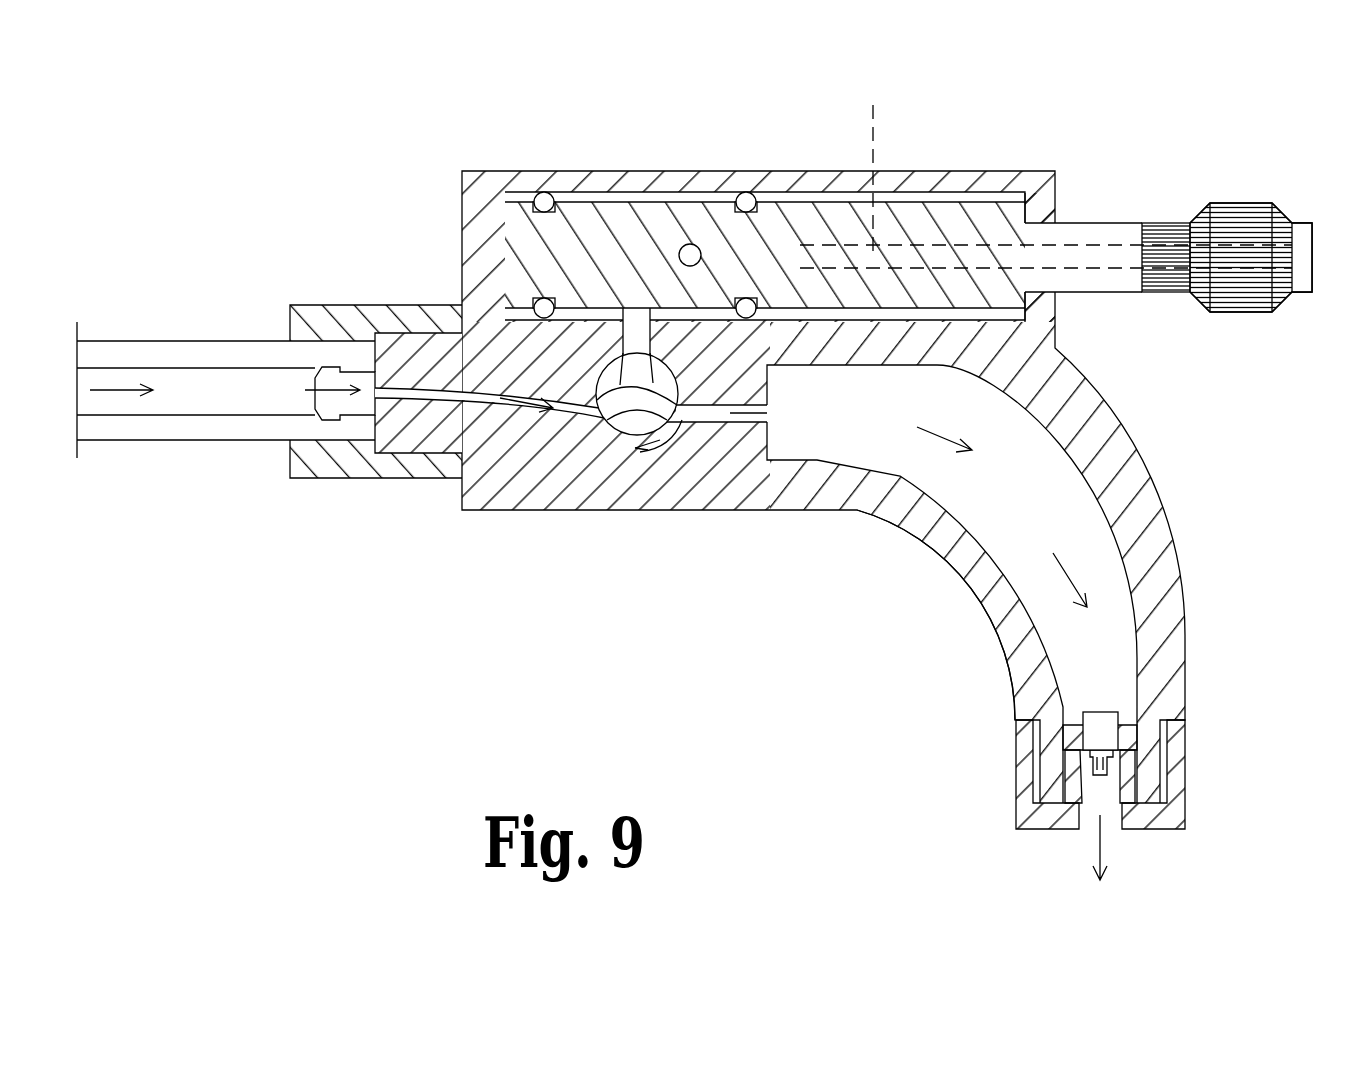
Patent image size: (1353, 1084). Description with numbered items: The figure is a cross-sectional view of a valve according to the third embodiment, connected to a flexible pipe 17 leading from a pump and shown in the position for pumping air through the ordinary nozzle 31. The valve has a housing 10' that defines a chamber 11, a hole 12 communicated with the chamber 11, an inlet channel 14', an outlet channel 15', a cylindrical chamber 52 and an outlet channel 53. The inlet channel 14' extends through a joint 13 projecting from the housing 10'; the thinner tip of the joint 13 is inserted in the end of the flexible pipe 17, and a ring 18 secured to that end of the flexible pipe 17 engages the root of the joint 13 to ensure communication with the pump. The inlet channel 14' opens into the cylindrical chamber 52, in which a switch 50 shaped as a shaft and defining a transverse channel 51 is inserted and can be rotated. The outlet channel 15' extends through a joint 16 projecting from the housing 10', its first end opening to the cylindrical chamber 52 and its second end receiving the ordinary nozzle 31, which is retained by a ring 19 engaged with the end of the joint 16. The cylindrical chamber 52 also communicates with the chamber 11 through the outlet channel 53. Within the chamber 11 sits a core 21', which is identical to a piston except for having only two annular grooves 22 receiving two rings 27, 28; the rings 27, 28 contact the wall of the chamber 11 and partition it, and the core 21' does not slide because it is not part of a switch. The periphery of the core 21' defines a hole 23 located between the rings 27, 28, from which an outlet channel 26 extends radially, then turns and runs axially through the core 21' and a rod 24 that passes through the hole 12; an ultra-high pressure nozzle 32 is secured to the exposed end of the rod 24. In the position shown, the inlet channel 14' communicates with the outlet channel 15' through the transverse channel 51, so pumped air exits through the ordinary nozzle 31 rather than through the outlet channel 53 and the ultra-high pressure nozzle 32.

The housing 10' is at (830, 643).
The chamber 11 is at (920, 200).
The hole 12 is at (1043, 223).
The joint 13 is at (390, 425).
The inlet channel 14' is at (454, 305).
The outlet channel 15' is at (952, 584).
The joint 16 is at (990, 597).
The flexible pipe 17 is at (140, 435).
The ring 18 is at (343, 467).
The ring 19 is at (1040, 822).
The core 21' is at (765, 197).
The annular grooves 22 is at (537, 197).
The hole 23 is at (688, 244).
The rod 24 is at (1098, 235).
The outlet channel 26 is at (874, 159).
The ring 27 is at (543, 192).
The ring 28 is at (745, 192).
The ordinary nozzle 31 is at (1123, 740).
The ultra-high pressure nozzle 32 is at (1242, 213).
The switch 50 is at (623, 425).
The transverse channel 51 is at (658, 405).
The cylindrical chamber 52 is at (600, 440).
The outlet channel 53 is at (635, 335).